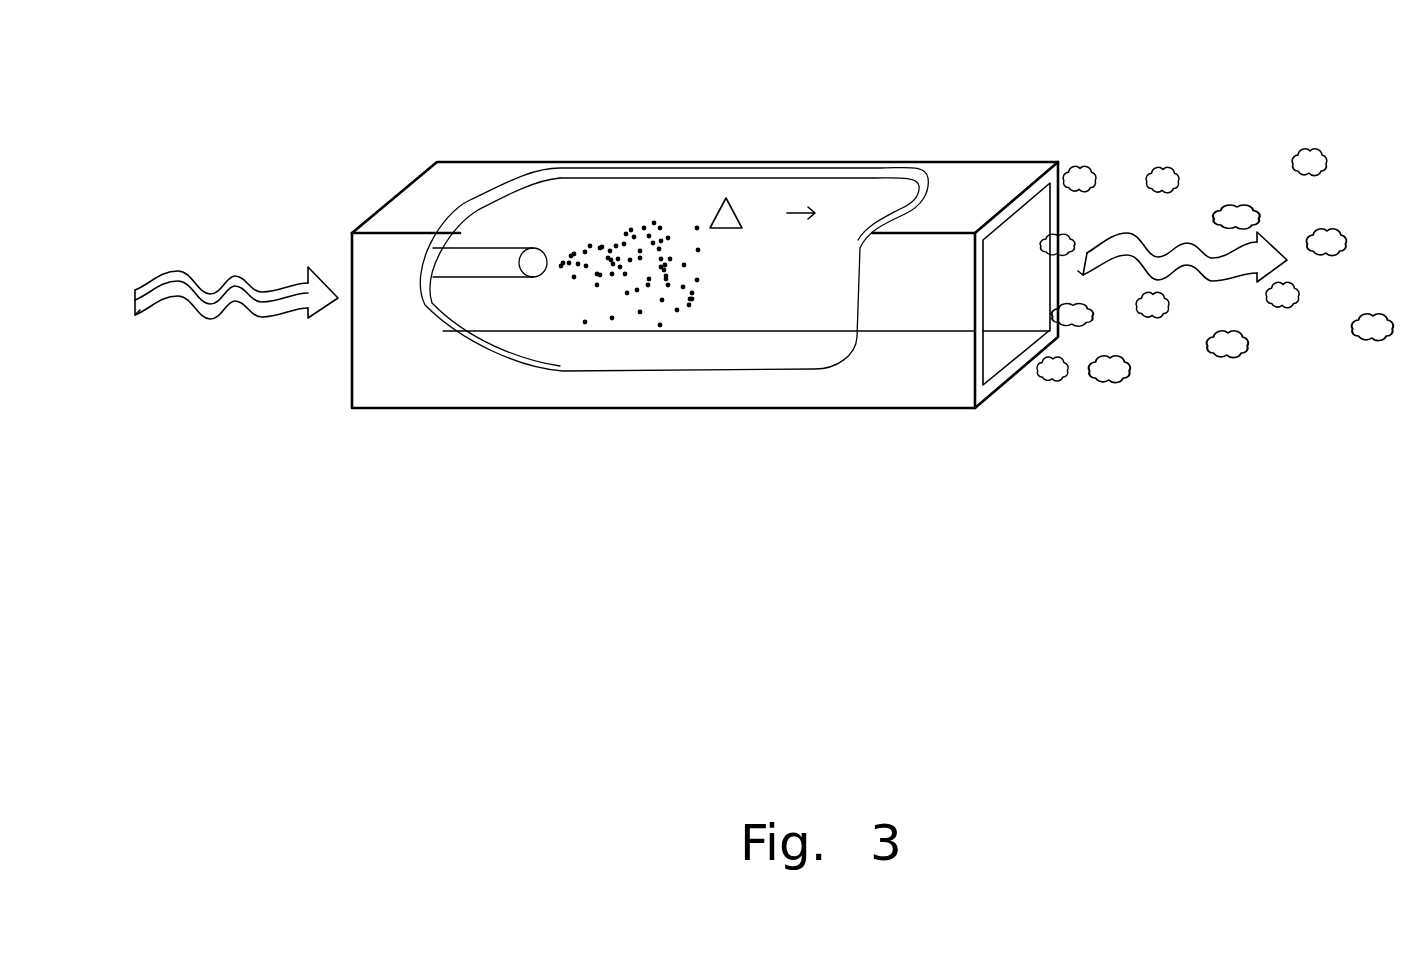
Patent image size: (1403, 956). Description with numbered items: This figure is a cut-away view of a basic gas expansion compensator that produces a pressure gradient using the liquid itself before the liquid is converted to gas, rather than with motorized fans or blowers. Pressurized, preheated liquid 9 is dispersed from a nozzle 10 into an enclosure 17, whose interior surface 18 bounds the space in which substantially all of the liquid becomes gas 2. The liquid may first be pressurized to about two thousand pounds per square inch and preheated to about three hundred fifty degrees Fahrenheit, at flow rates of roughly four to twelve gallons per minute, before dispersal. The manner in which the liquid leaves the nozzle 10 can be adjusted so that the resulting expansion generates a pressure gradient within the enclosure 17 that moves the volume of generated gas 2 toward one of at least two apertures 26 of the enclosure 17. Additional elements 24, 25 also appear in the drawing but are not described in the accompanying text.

The gas 2 is at (1188, 215).
The pressurized, preheated liquid 9 is at (617, 313).
The nozzle 10 is at (546, 256).
The enclosure 17 is at (980, 187).
The interior surface 18 is at (880, 200).
The housing 24 is at (1058, 150).
The flow passage / pressure differential region 25 is at (767, 235).
The apertures 26 is at (1002, 310).